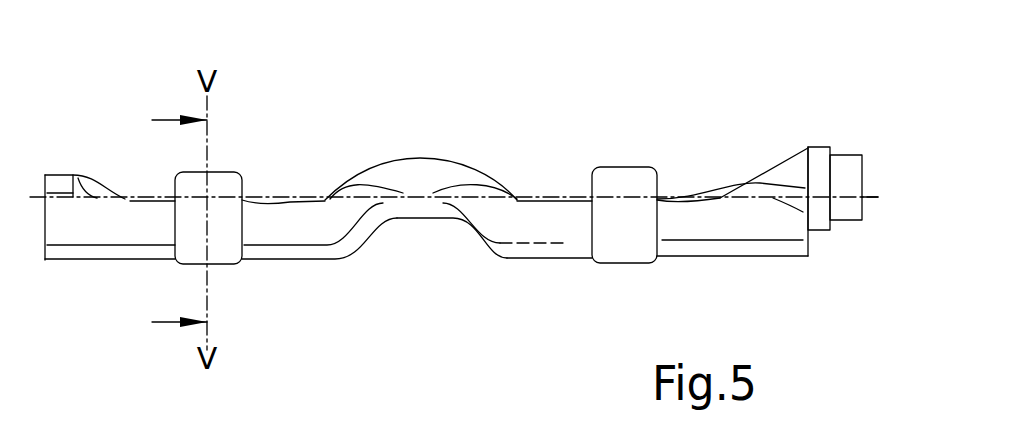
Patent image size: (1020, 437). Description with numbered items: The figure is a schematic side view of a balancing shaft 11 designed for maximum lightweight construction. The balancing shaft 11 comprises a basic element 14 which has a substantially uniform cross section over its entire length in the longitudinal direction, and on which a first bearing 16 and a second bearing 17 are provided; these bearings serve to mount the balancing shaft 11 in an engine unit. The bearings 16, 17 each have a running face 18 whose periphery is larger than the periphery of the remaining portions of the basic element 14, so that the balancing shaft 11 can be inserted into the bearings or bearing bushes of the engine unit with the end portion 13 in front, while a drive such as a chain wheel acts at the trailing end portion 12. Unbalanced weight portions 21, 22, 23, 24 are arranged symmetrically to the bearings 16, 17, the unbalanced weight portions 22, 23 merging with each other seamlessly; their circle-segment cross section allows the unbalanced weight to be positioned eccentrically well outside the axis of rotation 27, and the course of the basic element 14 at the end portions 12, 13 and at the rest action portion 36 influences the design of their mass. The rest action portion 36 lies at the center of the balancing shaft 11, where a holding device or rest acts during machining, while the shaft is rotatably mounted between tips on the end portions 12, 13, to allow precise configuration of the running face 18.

The balancing shaft 11 is at (552, 140).
The trailing end portion 12 is at (842, 143).
The end portion 13 is at (67, 170).
The basic element 14 is at (450, 248).
The first bearing 16 is at (220, 270).
The second bearing 17 is at (625, 273).
The running face 18 is at (230, 183).
The unbalanced weight portion 21 is at (130, 270).
The unbalanced weight portion 22 is at (305, 270).
The unbalanced weight portion 23 is at (550, 273).
The unbalanced weight portion 24 is at (740, 270).
The axis of rotation 27 is at (866, 197).
The rest action portion 36 is at (422, 150).